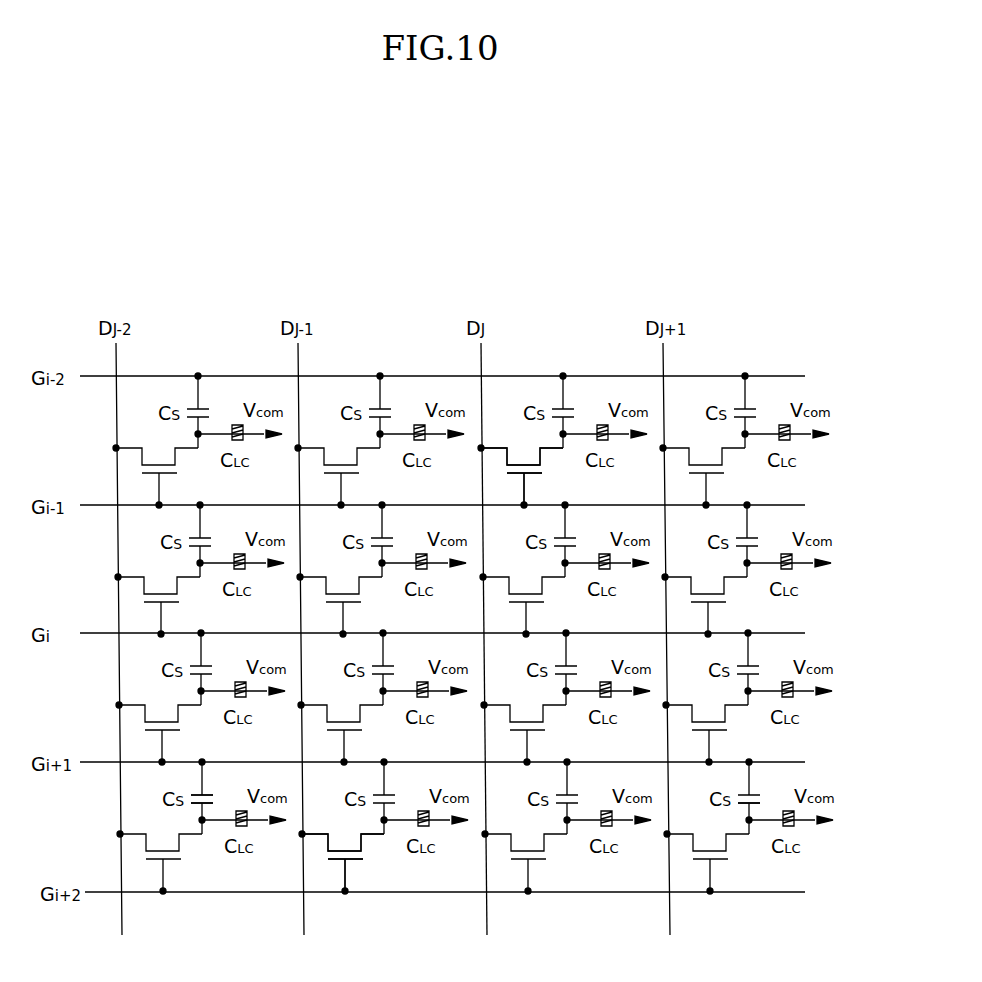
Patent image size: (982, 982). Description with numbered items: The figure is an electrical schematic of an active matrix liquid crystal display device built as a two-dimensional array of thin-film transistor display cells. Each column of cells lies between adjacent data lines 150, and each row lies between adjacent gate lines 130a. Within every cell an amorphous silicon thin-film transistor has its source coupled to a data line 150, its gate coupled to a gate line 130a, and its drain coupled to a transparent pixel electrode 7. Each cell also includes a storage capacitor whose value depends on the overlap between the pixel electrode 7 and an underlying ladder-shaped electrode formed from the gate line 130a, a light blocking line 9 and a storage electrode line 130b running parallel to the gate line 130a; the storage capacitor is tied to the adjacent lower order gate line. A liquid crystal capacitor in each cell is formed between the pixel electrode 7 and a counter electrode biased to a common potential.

The pixel electrode 7 is at (551, 453).
The light blocking line 9 is at (200, 790).
The gate line 130a is at (765, 894).
The storage electrode line 130b is at (193, 804).
The data line 150 is at (487, 922).